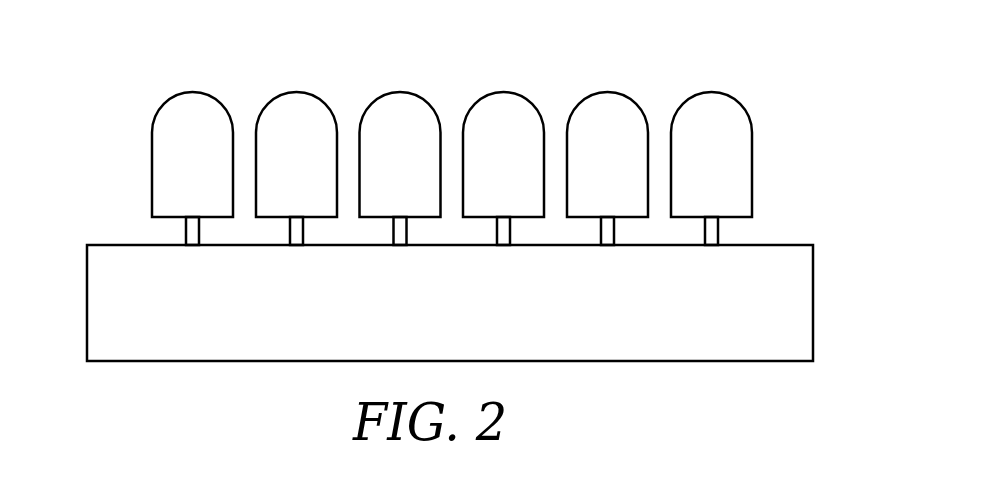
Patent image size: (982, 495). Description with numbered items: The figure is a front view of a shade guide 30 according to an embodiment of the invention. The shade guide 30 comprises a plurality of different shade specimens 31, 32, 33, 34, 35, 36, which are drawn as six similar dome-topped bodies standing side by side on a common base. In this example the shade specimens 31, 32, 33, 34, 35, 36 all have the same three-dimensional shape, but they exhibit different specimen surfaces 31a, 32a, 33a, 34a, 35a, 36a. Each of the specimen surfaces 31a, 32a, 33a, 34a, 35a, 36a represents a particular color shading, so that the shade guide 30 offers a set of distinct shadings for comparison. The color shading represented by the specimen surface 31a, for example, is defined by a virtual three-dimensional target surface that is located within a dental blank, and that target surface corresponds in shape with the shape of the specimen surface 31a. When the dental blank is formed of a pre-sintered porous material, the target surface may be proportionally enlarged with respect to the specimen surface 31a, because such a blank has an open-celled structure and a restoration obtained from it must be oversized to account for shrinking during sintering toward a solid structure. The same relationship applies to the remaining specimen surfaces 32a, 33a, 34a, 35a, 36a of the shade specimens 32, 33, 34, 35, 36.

The shade guide 30 is at (130, 84).
The shade specimen 31 is at (190, 110).
The shade specimen 32 is at (294, 110).
The shade specimen 33 is at (398, 110).
The shade specimen 34 is at (502, 110).
The shade specimen 35 is at (606, 110).
The shade specimen 36 is at (710, 110).
The specimen surface 31a is at (168, 190).
The specimen surface 32a is at (272, 190).
The specimen surface 33a is at (424, 190).
The specimen surface 34a is at (479, 190).
The specimen surface 35a is at (583, 190).
The specimen surface 36a is at (687, 190).